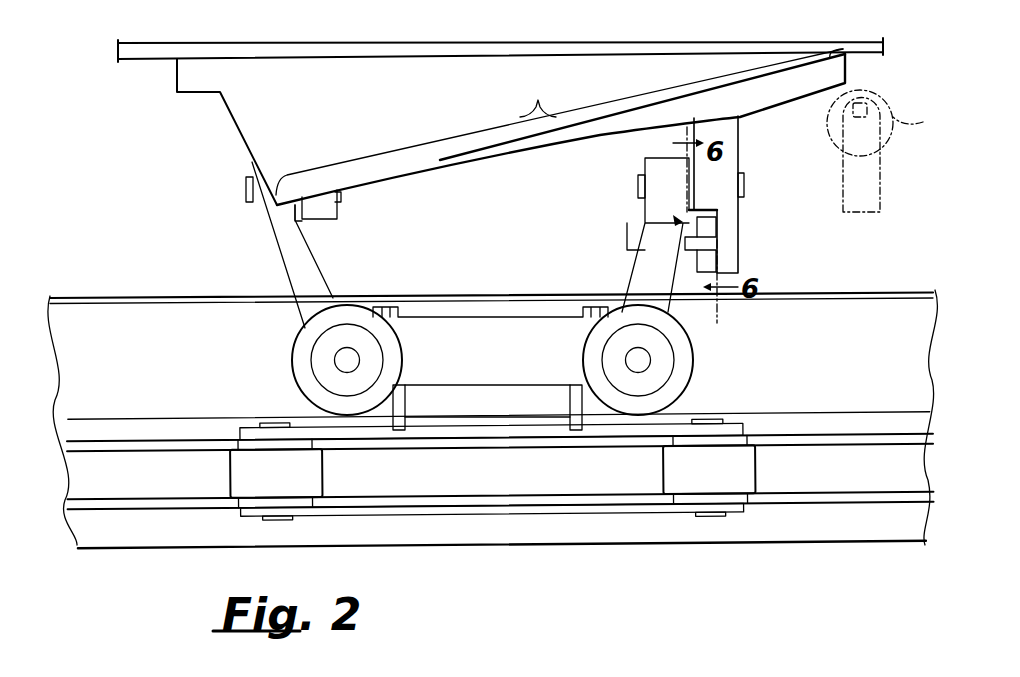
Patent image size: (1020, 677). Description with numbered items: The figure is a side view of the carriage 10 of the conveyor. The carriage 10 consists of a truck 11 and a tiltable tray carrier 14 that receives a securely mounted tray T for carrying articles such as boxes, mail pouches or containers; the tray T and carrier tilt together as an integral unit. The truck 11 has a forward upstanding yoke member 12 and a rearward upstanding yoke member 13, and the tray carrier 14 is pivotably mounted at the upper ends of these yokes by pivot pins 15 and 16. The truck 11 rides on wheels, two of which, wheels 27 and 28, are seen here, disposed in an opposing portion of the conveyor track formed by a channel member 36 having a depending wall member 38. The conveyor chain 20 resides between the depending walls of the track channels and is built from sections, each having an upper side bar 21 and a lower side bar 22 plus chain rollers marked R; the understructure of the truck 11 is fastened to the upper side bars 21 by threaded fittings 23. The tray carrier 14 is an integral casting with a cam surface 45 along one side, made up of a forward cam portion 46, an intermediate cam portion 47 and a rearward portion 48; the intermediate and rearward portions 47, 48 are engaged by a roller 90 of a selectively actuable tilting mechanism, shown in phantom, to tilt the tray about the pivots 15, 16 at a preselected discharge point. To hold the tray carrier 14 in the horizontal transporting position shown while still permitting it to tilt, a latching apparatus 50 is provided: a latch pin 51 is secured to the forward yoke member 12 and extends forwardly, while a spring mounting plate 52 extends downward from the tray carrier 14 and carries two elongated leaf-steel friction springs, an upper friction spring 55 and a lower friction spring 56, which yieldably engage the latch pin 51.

The tray T is at (418, 40).
The carriage 10 is at (183, 236).
The truck 11 is at (473, 328).
The forward upstanding yoke member 12 is at (663, 250).
The rearward upstanding yoke member 13 is at (297, 246).
The tray carrier 14 is at (497, 73).
The pivot pin 15 is at (742, 180).
The pivot pin 16 is at (250, 204).
The conveyor chain 20 is at (182, 507).
The upper link or side bar 21 is at (495, 434).
The lower link or side bar 22 is at (490, 506).
The threaded fitting 23 is at (410, 404).
The wheel 27 is at (308, 382).
The wheel 28 is at (692, 380).
The channel member 36 is at (853, 292).
The depending wall member 38 is at (812, 530).
The cam surface 45 is at (541, 98).
The forward cam portion 46 is at (842, 71).
The intermediate cam portion 47 is at (660, 112).
The rearward cam portion 48 is at (400, 173).
The latching apparatus 50 is at (680, 220).
The latch pin 51 is at (711, 241).
The spring mounting plate 52 is at (735, 210).
The upper friction spring 55 is at (716, 229).
The lower friction spring 56 is at (741, 266).
The roller 90 is at (890, 151).